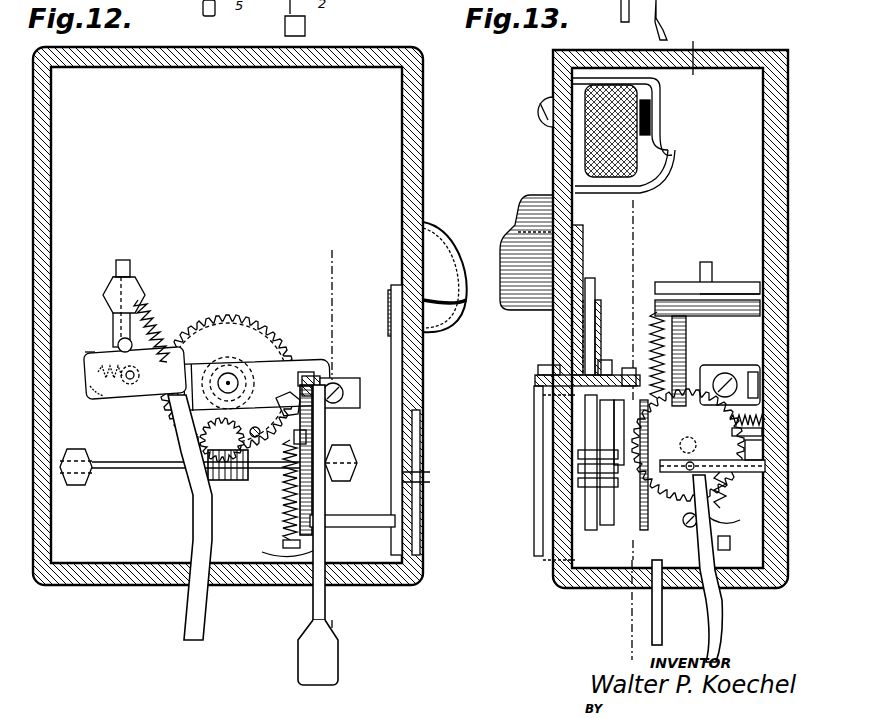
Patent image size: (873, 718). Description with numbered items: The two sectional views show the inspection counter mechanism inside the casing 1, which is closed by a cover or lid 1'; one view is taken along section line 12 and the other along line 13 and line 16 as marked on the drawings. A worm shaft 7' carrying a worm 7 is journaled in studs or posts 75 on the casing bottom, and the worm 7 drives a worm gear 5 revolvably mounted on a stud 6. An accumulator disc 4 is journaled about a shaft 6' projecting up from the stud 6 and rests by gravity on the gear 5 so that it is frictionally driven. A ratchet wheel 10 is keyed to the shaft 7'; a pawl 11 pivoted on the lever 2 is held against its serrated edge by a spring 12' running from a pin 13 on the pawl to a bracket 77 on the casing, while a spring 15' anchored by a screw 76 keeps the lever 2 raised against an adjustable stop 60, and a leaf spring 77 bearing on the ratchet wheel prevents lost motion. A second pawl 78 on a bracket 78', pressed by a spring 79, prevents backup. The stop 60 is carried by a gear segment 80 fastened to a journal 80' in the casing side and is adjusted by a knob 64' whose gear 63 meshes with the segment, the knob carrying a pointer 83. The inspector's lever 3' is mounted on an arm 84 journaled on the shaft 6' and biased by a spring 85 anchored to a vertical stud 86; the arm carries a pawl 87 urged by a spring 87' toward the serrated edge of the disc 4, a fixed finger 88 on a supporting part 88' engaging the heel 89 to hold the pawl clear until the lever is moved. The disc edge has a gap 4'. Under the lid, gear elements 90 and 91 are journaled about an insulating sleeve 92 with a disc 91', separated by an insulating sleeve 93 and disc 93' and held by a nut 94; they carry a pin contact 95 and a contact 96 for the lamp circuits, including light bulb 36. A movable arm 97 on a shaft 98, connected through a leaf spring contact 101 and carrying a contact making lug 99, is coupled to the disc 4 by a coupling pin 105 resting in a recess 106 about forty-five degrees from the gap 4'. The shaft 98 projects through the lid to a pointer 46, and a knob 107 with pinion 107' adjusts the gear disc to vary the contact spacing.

In FIG. 12, the casing 1 is at (245, 316).
In FIG. 13, the casing 1 is at (670, 315).
In FIG. 13, the cover or lid 1' is at (535, 485).
In FIG. 12, the lever 2 is at (313, 603).
In FIG. 13, the lever 2 is at (721, 605).
In FIG. 12, the lever 3' is at (179, 517).
In FIG. 13, the lever 3' is at (669, 602).
In FIG. 12, the accumulator disc 4 is at (228, 370).
In FIG. 13, the accumulator disc 4 is at (706, 271).
In FIG. 12, the gap 4' is at (251, 393).
In FIG. 12, the worm gear 5 is at (265, 326).
In FIG. 13, the worm gear 5 is at (690, 312).
In FIG. 12, the stud 6 is at (228, 348).
In FIG. 13, the stud 6 is at (723, 376).
In FIG. 12, the shaft 6' is at (220, 339).
In FIG. 12, the worm 7 is at (228, 478).
In FIG. 12, the worm shaft 7' is at (196, 482).
In FIG. 13, the worm shaft 7' is at (698, 445).
In FIG. 12, the ratchet wheel 10 is at (313, 496).
In FIG. 13, the ratchet wheel 10 is at (644, 500).
In FIG. 12, the pawl 11 is at (280, 555).
In FIG. 13, the pawl 11 is at (728, 526).
In FIG. 13, the section line 12 is at (661, 342).
In FIG. 12, the spring 12' is at (273, 490).
In FIG. 13, the spring 12' is at (681, 472).
In FIG. 12, the pin 13 is at (283, 543).
In FIG. 13, the pin 13 is at (730, 546).
In FIG. 13, the spring 15' is at (736, 495).
In FIG. 13, the section line 16 is at (638, 209).
In FIG. 13, the electric light bulb 36 is at (530, 112).
In FIG. 13, the pointer 46 is at (584, 468).
In FIG. 12, the adjustable stop 60 is at (342, 527).
In FIG. 13, the adjustable stop 60 is at (690, 528).
In FIG. 12, the gear 63 is at (394, 290).
In FIG. 12, the knob 64' is at (444, 333).
In FIG. 12, the studs or posts 75 is at (80, 486).
In FIG. 13, the studs or posts 75 is at (764, 455).
In FIG. 12, the screw 76 is at (296, 438).
In FIG. 13, the screw 76 is at (764, 433).
In FIG. 12, the bracket / leaf spring 77 is at (288, 394).
In FIG. 13, the bracket / leaf spring 77 is at (768, 420).
In FIG. 12, the pawl 78 is at (317, 369).
In FIG. 13, the pawl 78 is at (730, 368).
In FIG. 12, the bracket 78' is at (340, 383).
In FIG. 13, the bracket 78' is at (732, 276).
In FIG. 12, the spring 79 is at (305, 372).
In FIG. 13, the spring 79 is at (752, 376).
In FIG. 12, the gear segment 80 is at (377, 420).
In FIG. 12, the journal 80' is at (432, 482).
In FIG. 12, the pointer 83 is at (441, 250).
In FIG. 12, the arm 84 is at (100, 398).
In FIG. 13, the arm 84 is at (647, 353).
In FIG. 12, the spring 85 is at (150, 338).
In FIG. 12, the vertical stud 86 is at (112, 282).
In FIG. 12, the pawl 87 is at (135, 389).
In FIG. 12, the spring 87' is at (75, 360).
In FIG. 12, the fixed finger 88 is at (95, 312).
In FIG. 12, the supporting part 88' is at (141, 249).
In FIG. 13, the supporting part 88' is at (683, 251).
In FIG. 12, the heel 89 is at (121, 339).
In FIG. 13, the gear element 90 is at (590, 278).
In FIG. 13, the gear element 91 is at (550, 300).
In FIG. 13, the disc 91' is at (542, 477).
In FIG. 13, the insulating sleeve 92 is at (600, 362).
In FIG. 13, the insulating sleeve 93 is at (575, 388).
In FIG. 13, the disc 93' is at (550, 337).
In FIG. 13, the fastening or holding nut 94 is at (610, 366).
In FIG. 13, the pin contact 95 is at (598, 528).
In FIG. 13, the contact 96 is at (584, 484).
In FIG. 13, the movable arm 97 is at (624, 456).
In FIG. 13, the shaft 98 is at (538, 368).
In FIG. 13, the contact making lug 99 is at (584, 452).
In FIG. 13, the leaf spring contact 101 is at (630, 368).
In FIG. 12, the coupling pin 105 is at (222, 440).
In FIG. 12, the recess 106 is at (255, 428).
In FIG. 13, the knob 107 is at (526, 246).
In FIG. 13, the pinion 107' is at (515, 235).